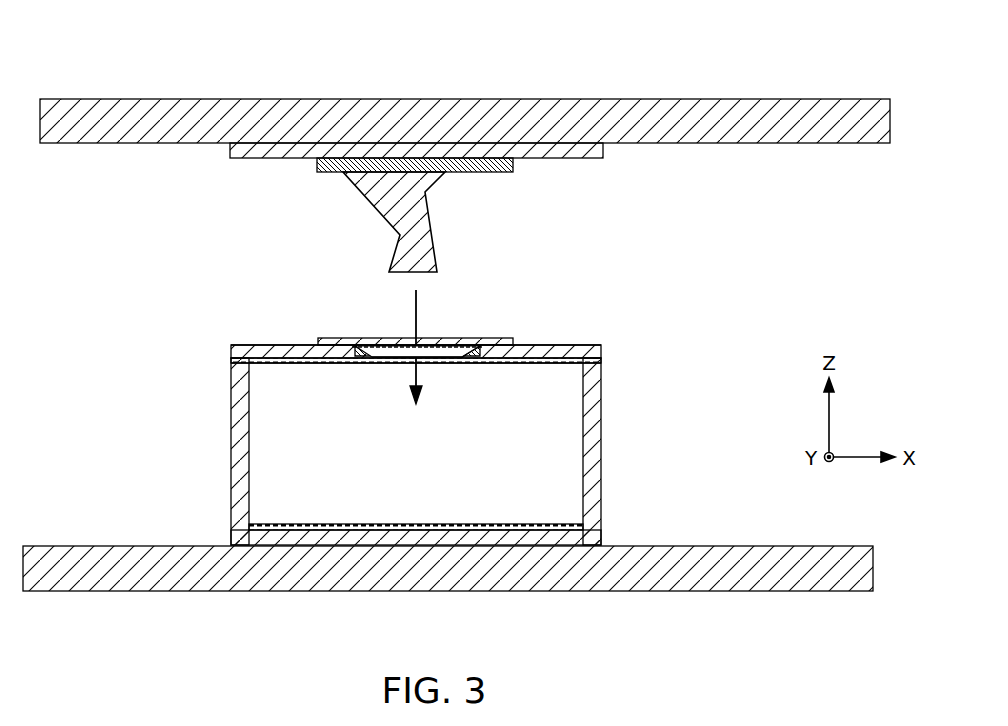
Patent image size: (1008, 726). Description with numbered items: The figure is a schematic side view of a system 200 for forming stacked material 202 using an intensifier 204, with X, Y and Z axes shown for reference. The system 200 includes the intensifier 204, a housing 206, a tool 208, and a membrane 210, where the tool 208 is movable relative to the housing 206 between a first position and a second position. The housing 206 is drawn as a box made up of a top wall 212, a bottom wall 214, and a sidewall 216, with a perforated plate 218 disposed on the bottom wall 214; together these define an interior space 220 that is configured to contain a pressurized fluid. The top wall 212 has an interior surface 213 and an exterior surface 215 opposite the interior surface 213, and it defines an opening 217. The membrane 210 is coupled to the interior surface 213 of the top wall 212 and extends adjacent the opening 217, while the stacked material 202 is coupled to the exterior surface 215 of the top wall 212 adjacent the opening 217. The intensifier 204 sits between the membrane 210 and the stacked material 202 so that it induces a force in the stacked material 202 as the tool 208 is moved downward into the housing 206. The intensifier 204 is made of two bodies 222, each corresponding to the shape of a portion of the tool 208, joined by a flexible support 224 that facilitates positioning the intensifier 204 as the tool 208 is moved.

The system 200 is at (88, 52).
The stacked material 202 is at (490, 340).
The intensifier 204 is at (378, 360).
The housing 206 is at (594, 392).
The tool 208 is at (425, 219).
The membrane 210 is at (283, 364).
The top wall 212 is at (565, 352).
The interior surface 213 is at (305, 357).
The bottom wall 214 is at (289, 542).
The exterior surface 215 is at (255, 345).
The sidewall 216 is at (237, 418).
The opening 217 is at (488, 361).
The perforated plate 218 is at (563, 530).
The interior space 220 is at (296, 468).
The bodies 222 is at (360, 348).
The support 224 is at (440, 358).